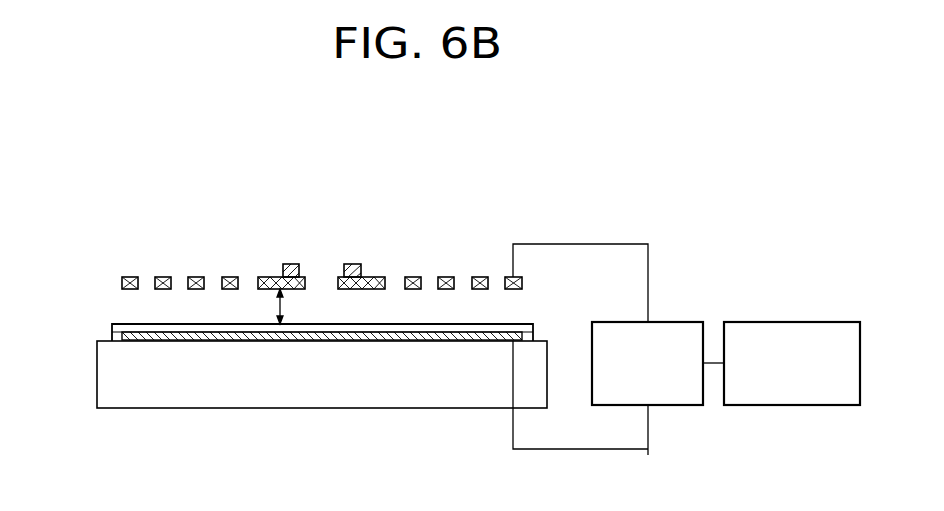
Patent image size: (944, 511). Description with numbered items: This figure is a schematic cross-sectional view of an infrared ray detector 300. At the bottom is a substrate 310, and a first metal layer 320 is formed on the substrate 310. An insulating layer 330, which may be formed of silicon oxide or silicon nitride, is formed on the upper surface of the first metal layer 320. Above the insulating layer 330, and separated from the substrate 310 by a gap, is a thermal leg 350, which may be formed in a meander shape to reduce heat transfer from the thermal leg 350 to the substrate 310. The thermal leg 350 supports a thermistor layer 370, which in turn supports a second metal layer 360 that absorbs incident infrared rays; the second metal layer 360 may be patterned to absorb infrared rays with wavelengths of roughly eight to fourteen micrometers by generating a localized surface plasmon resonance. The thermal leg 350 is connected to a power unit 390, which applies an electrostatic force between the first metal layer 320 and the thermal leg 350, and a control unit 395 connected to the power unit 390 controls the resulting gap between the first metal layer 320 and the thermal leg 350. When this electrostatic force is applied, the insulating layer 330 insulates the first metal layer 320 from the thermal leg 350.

The infrared ray detector 300 is at (84, 222).
The substrate 310 is at (103, 378).
The first metal layer 320 is at (122, 335).
The insulating layer 330 is at (114, 325).
The thermal leg 350 is at (120, 282).
The second metal layer 360 is at (283, 265).
The thermistor layer 370 is at (282, 276).
The power unit 390 is at (678, 320).
The control unit 395 is at (792, 320).